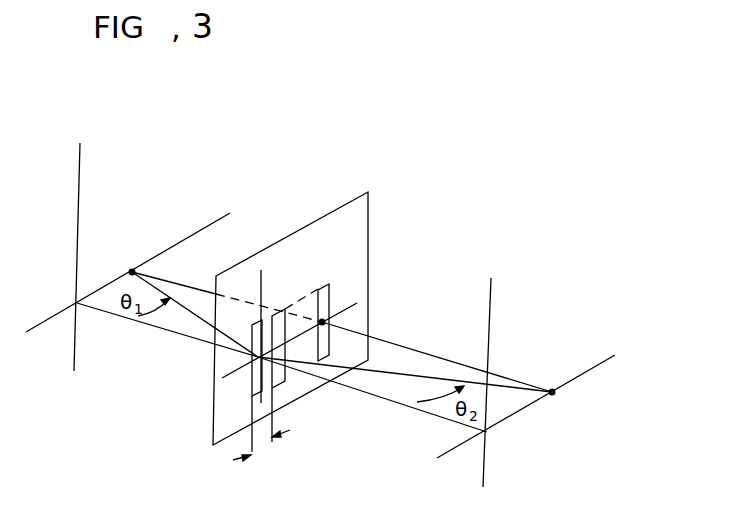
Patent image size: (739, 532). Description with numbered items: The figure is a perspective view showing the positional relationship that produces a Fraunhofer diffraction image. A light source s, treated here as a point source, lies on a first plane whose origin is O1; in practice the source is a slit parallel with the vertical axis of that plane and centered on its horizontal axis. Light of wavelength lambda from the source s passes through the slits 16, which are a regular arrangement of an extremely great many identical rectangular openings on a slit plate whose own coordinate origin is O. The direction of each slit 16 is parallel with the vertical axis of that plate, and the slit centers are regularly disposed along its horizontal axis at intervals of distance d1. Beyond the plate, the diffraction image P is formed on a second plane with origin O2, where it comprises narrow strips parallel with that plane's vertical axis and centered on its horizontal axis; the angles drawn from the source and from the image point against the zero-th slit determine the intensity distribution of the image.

The slits 16 is at (329, 289).
The origin of X1-Y1 plane O1 is at (140, 242).
The origin of X2-Y2 plane O2 is at (538, 368).
The light source s is at (131, 262).
The diffraction image P is at (551, 381).
The origin of slit plane O is at (289, 326).
The slit interval distance d1 is at (261, 433).